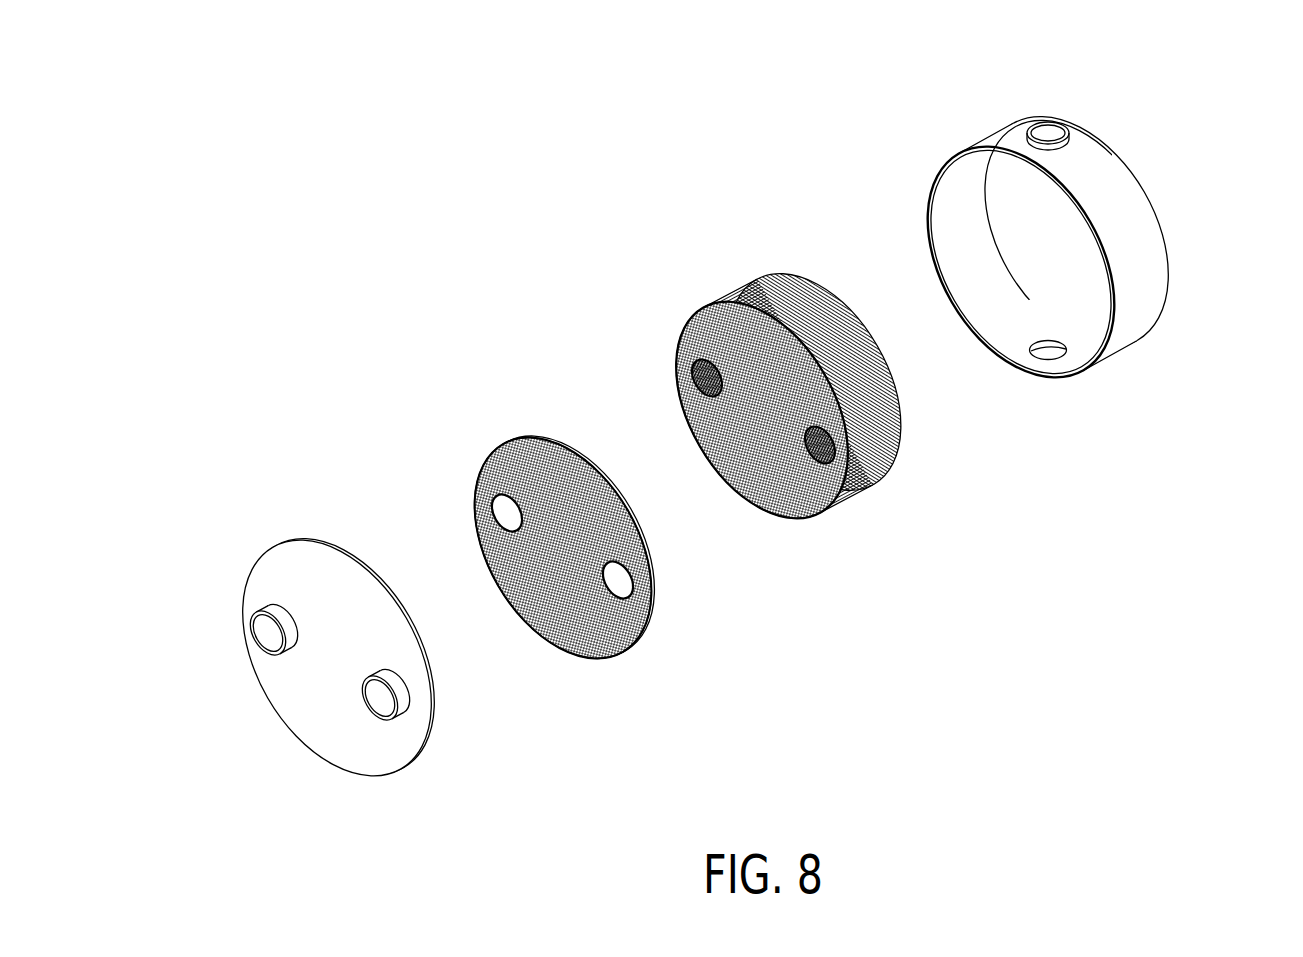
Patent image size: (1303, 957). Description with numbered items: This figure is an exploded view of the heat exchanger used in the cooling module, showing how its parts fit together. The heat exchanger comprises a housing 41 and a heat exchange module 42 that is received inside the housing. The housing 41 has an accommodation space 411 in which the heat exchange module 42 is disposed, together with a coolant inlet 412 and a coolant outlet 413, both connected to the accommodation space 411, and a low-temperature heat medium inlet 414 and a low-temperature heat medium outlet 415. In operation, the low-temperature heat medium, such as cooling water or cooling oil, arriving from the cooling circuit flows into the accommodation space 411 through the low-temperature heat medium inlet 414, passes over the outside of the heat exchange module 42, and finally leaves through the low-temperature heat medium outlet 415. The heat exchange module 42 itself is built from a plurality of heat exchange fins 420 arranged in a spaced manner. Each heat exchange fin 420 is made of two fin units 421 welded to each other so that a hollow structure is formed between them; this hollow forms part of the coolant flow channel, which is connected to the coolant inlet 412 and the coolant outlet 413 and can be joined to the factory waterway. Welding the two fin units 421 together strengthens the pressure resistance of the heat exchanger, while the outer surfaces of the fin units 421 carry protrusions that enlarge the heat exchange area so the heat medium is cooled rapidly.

The housing 41 is at (1133, 303).
The accommodation space 411 is at (941, 204).
The coolant inlet 412 is at (265, 633).
The coolant outlet 413 is at (375, 698).
The low-temperature heat medium inlet 414 is at (1046, 130).
The low-temperature heat medium outlet 415 is at (1048, 355).
The heat exchange module 42 is at (687, 421).
The heat exchange fin 420 is at (707, 260).
The fin unit 421 is at (494, 363).